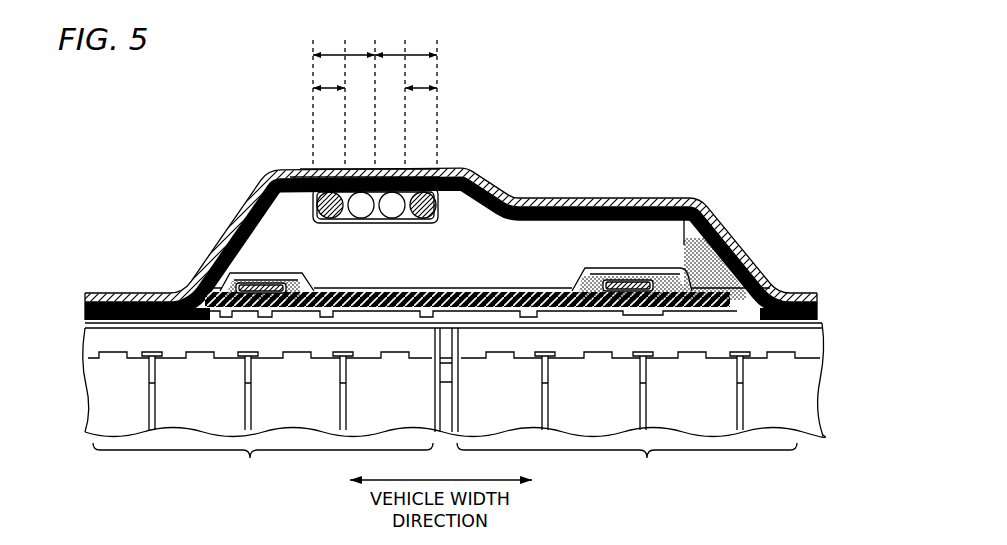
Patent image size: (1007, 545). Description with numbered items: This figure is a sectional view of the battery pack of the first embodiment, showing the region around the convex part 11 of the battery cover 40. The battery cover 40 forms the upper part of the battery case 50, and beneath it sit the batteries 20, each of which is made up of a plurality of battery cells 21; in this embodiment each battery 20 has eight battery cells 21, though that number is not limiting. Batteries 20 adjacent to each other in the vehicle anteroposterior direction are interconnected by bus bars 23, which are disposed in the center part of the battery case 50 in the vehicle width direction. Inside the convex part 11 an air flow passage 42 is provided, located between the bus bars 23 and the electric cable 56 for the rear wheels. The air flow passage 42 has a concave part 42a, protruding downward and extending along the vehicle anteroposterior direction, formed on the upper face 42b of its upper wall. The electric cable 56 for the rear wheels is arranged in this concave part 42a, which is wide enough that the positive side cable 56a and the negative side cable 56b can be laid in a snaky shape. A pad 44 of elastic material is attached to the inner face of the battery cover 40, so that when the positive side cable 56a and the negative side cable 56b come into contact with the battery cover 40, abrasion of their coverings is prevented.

The convex part 11 is at (719, 218).
The battery 20 is at (454, 403).
The battery cell 21 is at (101, 415).
The bus bar 23 is at (258, 287).
The battery cover 40 is at (530, 192).
The air flow passage 42 is at (557, 211).
The concave part 42a is at (397, 214).
The upper face 42b is at (291, 193).
The pad 44 is at (238, 218).
The battery case 50 is at (595, 70).
The electric cable for the rear wheels 56 is at (232, 79).
The positive side cable 56a is at (360, 167).
The negative side cable 56b is at (297, 167).